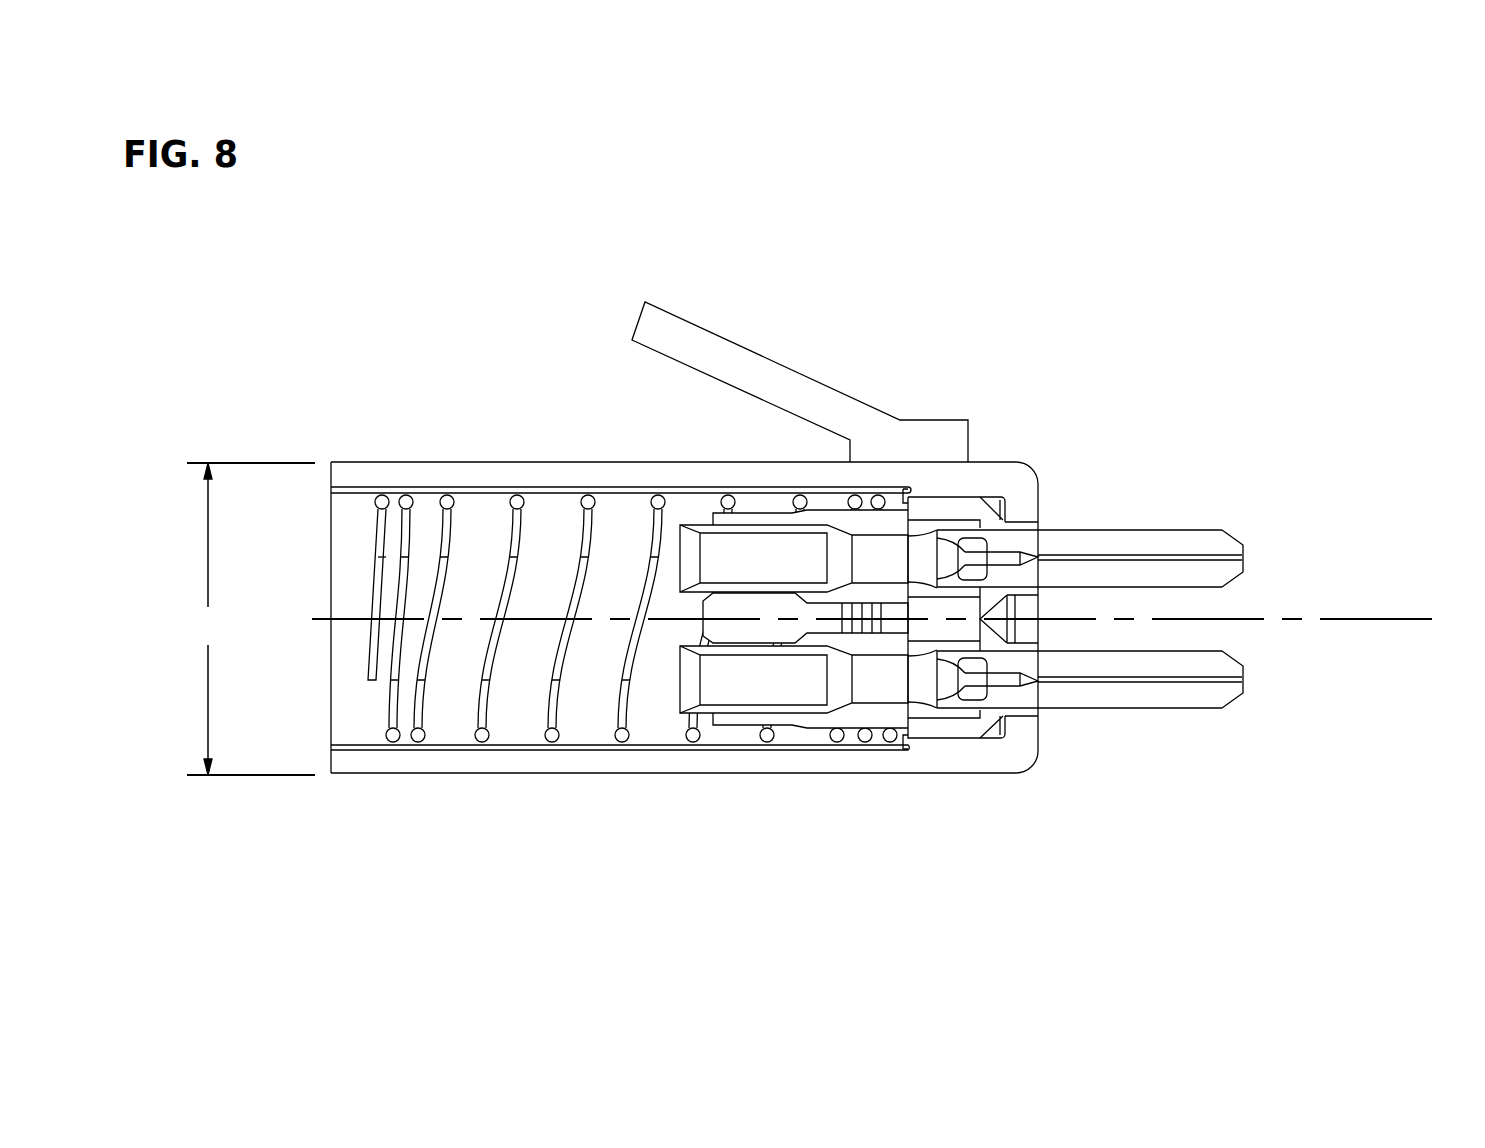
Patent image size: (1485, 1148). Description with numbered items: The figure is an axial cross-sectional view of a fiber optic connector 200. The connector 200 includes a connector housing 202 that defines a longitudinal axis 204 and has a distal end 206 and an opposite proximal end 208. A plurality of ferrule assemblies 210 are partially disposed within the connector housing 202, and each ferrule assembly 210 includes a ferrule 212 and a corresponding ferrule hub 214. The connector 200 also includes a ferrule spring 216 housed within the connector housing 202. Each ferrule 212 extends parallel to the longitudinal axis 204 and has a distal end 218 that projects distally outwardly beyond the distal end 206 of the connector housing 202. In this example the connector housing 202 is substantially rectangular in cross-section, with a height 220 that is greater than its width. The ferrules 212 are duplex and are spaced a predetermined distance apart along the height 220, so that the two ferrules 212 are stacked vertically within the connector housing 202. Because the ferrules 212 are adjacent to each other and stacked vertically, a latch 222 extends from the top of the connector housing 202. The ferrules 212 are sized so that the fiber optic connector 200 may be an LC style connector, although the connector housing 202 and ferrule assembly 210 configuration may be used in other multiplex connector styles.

The fiber optic connector 200 is at (365, 323).
The connector housing 202 is at (428, 770).
The longitudinal axis 204 is at (1378, 617).
The distal end 206 is at (1035, 495).
The proximal end 208 is at (332, 462).
The ferrule assemblies 210 is at (950, 740).
The ferrule 212 is at (1138, 527).
The ferrule hub 214 is at (762, 513).
The ferrule spring 216 is at (553, 737).
The distal end 218 is at (1238, 542).
The height 220 is at (251, 619).
The latch 222 is at (693, 340).